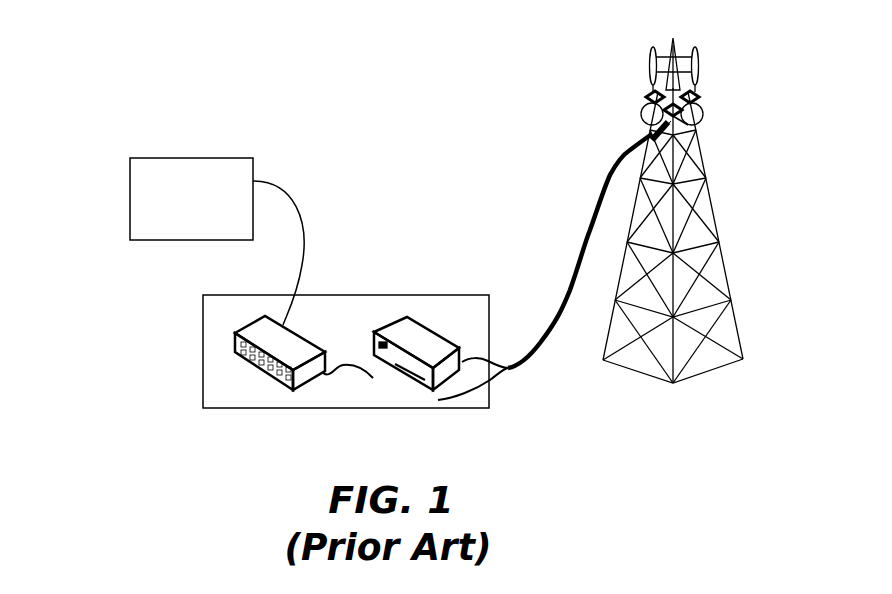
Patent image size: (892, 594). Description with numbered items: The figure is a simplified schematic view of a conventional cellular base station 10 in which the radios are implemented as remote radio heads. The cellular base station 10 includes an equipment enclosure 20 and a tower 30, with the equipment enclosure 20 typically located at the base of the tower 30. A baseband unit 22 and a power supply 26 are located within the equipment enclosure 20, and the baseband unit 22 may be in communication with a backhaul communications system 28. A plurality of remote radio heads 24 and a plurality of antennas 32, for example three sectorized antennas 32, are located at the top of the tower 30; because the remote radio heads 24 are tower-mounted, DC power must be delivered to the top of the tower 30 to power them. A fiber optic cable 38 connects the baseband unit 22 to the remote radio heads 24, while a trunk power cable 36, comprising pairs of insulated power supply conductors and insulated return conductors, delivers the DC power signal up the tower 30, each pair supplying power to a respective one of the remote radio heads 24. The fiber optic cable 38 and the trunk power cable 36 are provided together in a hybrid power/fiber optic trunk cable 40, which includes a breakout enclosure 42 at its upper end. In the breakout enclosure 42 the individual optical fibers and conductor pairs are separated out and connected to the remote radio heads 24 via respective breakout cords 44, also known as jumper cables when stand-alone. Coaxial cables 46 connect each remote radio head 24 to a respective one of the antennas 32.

The cellular base station 10 is at (435, 107).
The equipment enclosure 20 is at (203, 352).
The baseband unit 22 is at (250, 323).
The remote radio heads 24 is at (648, 100).
The power supply 26 is at (415, 323).
The backhaul communications system 28 is at (217, 241).
The tower 30 is at (722, 258).
The antennas 32 is at (648, 60).
The trunk power cable 36 is at (478, 367).
The fiber optic cable 38 is at (357, 363).
The hybrid power/fiber optic trunk cable 40 is at (602, 213).
The breakout enclosure 42 is at (648, 135).
The breakout cords 44 is at (688, 125).
The coaxial cables 46 is at (687, 48).